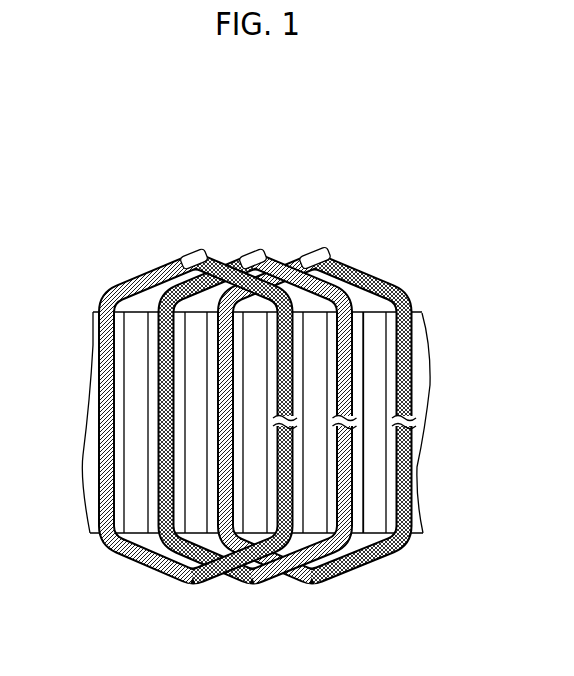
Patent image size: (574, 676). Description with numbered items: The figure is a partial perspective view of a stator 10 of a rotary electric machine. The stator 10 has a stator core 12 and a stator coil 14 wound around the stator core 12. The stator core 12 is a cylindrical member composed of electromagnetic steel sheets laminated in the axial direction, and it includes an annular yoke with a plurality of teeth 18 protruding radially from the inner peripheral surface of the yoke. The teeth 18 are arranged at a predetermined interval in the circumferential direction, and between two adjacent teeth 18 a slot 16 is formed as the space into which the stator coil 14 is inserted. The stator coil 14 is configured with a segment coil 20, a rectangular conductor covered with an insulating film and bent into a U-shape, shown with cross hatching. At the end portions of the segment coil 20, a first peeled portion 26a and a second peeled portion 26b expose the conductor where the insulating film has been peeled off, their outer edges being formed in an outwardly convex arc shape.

The stator 10 is at (267, 187).
The stator core 12 is at (417, 313).
The stator coil 14 is at (218, 584).
The slot 16 is at (354, 531).
The teeth 18 is at (378, 531).
The segment coil 20 is at (138, 566).
The first peeled portion 26a is at (265, 252).
The second peeled portion 26b is at (321, 250).